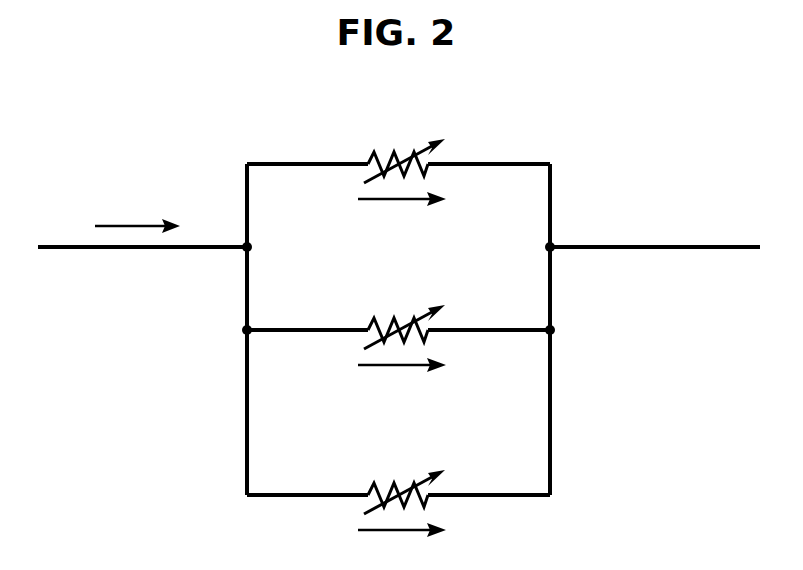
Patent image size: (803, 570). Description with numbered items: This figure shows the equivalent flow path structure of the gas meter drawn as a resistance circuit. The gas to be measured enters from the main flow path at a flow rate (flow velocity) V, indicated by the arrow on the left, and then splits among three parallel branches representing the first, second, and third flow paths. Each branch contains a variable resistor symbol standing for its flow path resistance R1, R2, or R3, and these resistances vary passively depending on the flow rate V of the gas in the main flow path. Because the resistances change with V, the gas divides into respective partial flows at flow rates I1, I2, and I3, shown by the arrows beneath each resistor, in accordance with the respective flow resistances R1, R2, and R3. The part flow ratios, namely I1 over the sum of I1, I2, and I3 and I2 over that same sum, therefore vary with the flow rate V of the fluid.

The flow rate (flow velocity) V is at (137, 210).
The flow path resistance R1 is at (404, 144).
The flow path resistance R2 is at (404, 310).
The flow path resistance R3 is at (404, 475).
The flow rate I1 is at (417, 199).
The flow rate I2 is at (417, 365).
The flow rate I3 is at (417, 530).